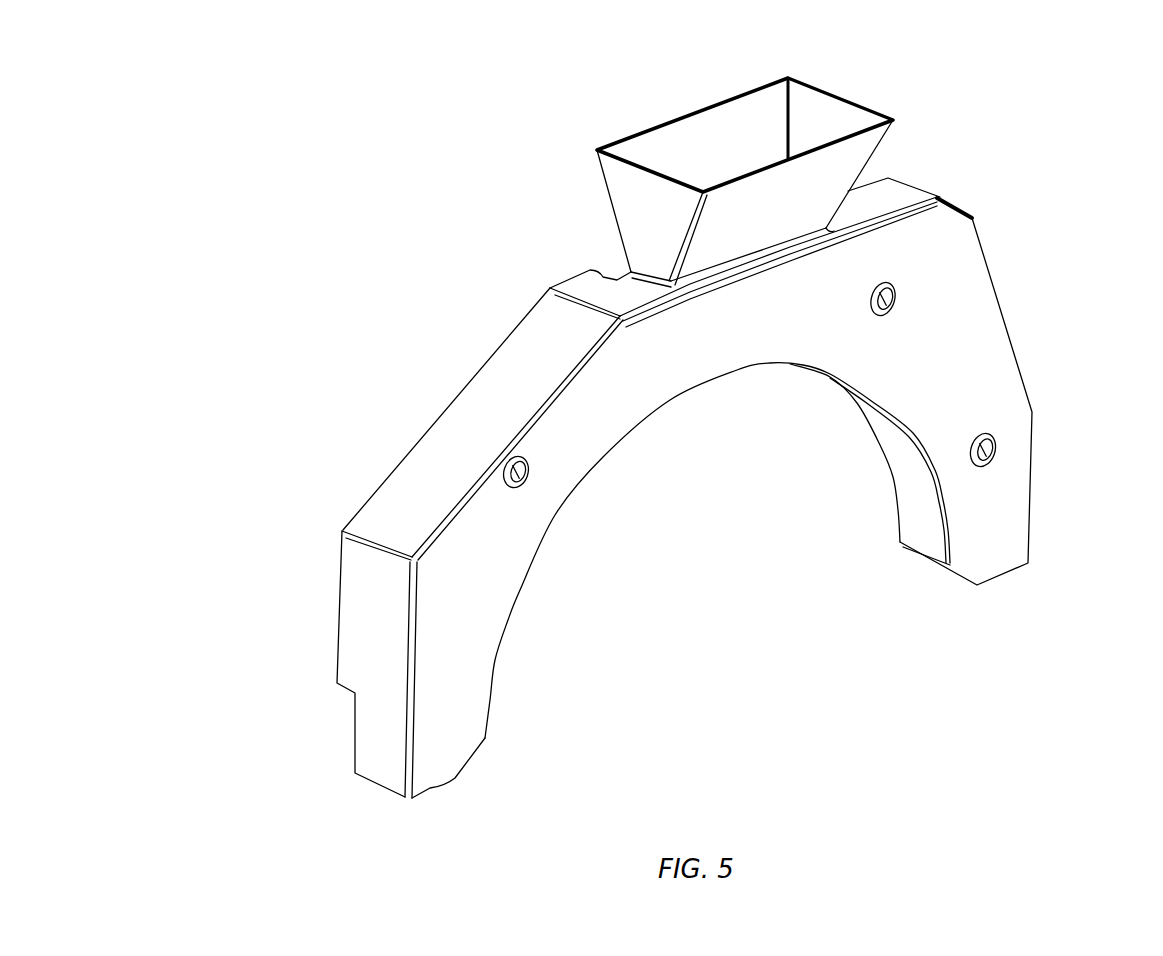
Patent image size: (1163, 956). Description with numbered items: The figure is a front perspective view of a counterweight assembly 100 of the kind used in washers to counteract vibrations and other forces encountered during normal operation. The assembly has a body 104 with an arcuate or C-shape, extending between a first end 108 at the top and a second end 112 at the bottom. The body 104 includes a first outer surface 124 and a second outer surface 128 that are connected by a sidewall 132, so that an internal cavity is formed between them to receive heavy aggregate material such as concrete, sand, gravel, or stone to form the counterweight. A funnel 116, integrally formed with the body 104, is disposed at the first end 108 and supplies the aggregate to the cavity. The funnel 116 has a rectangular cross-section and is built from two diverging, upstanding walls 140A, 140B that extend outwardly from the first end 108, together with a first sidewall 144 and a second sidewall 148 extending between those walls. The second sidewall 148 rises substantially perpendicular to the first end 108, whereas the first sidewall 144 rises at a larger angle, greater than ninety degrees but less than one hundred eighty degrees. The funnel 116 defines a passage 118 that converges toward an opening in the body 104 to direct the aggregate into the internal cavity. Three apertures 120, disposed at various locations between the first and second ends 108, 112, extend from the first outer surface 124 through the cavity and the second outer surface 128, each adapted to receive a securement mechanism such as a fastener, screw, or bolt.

The counterweight assembly 100 is at (285, 136).
The body 104 is at (1049, 290).
The first end 108 is at (896, 193).
The second end 112 is at (430, 792).
The funnel 116 is at (729, 152).
The passage 118 is at (729, 148).
The aperture 120 is at (522, 476).
The first outer surface 124 is at (447, 412).
The second outer surface 128 is at (748, 351).
The sidewall 132 is at (373, 510).
The upstanding wall 140A is at (797, 223).
The upstanding wall 140B is at (658, 138).
The first sidewall 144 is at (833, 110).
The second sidewall 148 is at (622, 202).